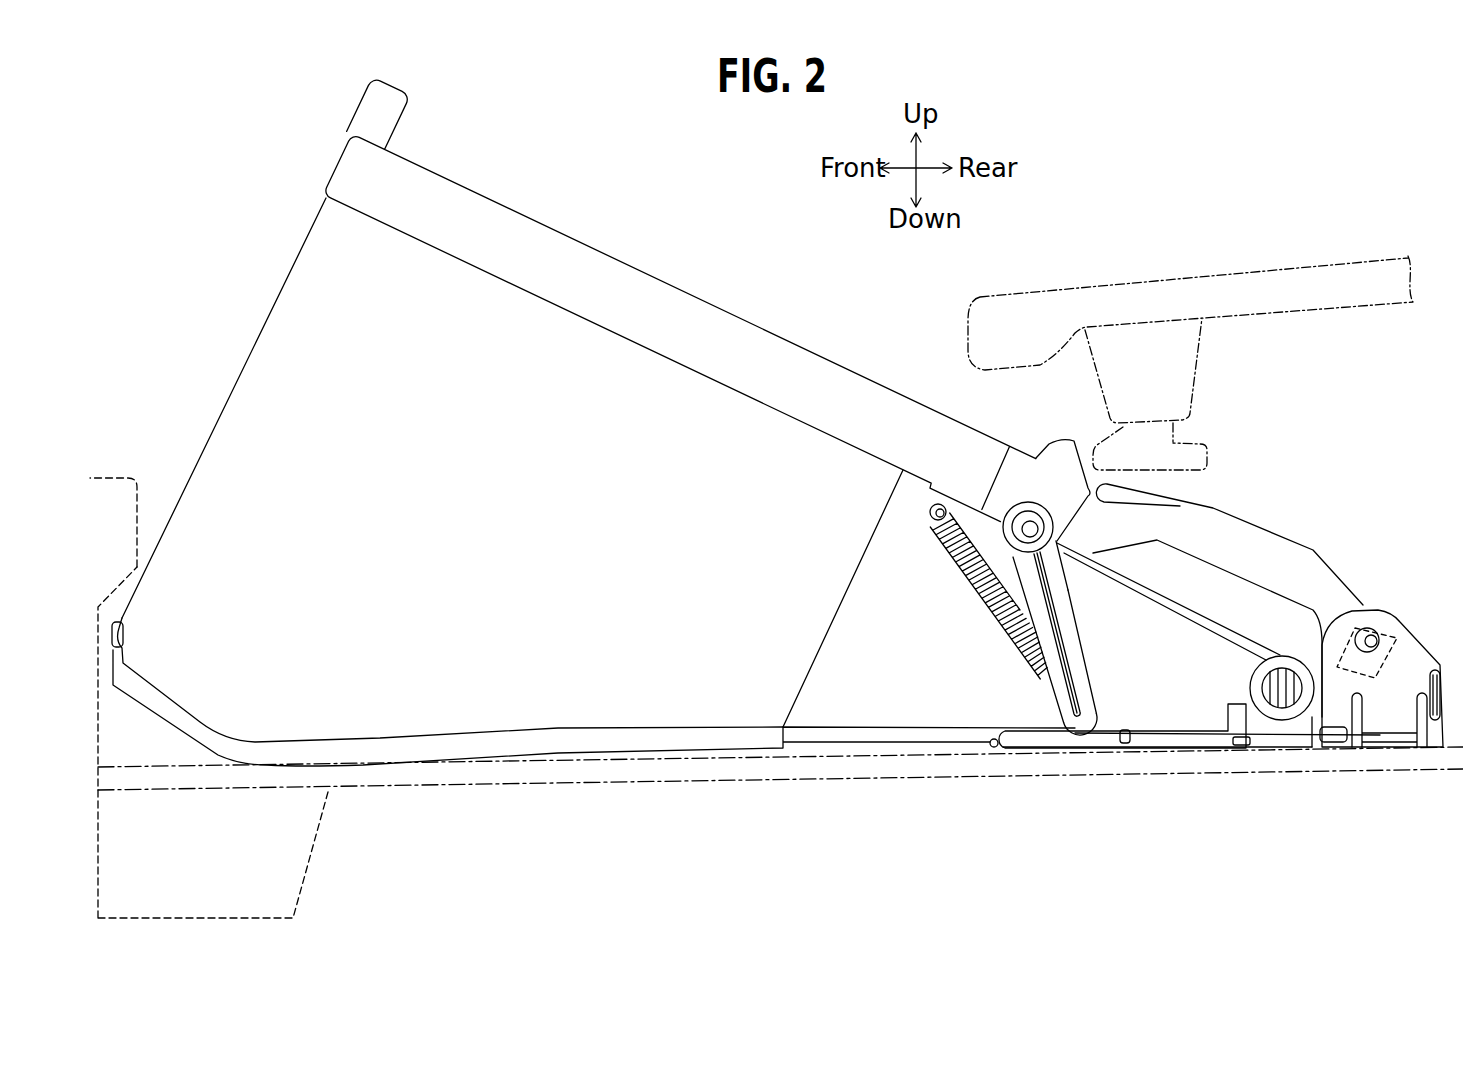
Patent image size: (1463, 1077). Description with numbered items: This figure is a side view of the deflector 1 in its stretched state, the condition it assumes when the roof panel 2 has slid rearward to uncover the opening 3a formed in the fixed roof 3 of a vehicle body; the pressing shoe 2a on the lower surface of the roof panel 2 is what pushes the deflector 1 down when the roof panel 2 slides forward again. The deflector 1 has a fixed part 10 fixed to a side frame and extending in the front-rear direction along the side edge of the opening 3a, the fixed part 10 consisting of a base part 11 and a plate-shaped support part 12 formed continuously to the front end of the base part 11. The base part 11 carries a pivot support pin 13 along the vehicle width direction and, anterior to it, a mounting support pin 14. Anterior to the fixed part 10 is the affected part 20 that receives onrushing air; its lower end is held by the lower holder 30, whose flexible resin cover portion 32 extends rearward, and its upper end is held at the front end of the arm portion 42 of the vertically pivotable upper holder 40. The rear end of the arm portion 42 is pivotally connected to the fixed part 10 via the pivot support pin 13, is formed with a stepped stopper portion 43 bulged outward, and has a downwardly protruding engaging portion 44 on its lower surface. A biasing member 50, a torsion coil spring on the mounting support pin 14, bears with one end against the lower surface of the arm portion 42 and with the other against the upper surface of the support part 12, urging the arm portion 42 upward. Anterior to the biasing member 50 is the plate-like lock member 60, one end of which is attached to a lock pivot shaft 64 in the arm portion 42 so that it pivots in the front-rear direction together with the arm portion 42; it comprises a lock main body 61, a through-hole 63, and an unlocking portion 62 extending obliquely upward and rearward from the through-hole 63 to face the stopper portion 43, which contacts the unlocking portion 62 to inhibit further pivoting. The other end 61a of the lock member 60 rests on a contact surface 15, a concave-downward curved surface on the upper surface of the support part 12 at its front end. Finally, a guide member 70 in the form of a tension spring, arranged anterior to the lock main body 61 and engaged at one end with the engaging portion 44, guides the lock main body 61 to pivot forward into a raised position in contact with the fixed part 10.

The deflector 1 is at (536, 175).
The roof panel 2 is at (1190, 331).
The pressing shoe 2a is at (1207, 452).
The fixed roof 3 is at (209, 659).
The opening 3a is at (142, 502).
The fixed part 10 is at (1384, 687).
The base part 11 is at (1388, 697).
The support part 12 is at (1172, 736).
The pivot support pin 13 is at (1373, 633).
The mounting support pin 14 is at (1292, 697).
The contact surface 15 is at (1030, 733).
The affected part 20 is at (287, 378).
The lower holder 30 is at (593, 733).
The cover portion 32 is at (430, 750).
The upper holder 40 is at (689, 300).
The arm portion 42 is at (637, 290).
The stopper portion 43 is at (1118, 488).
The engaging portion 44 is at (933, 530).
The biasing member 50 is at (1206, 618).
The lock member 60 is at (1087, 678).
The lock main body 61 is at (1082, 657).
The other end of the lock member 61a is at (1097, 737).
The unlocking portion 62 is at (1063, 467).
The through-hole 63 is at (1066, 576).
The lock pivot shaft 64 is at (1028, 520).
The guide member 70 is at (987, 600).